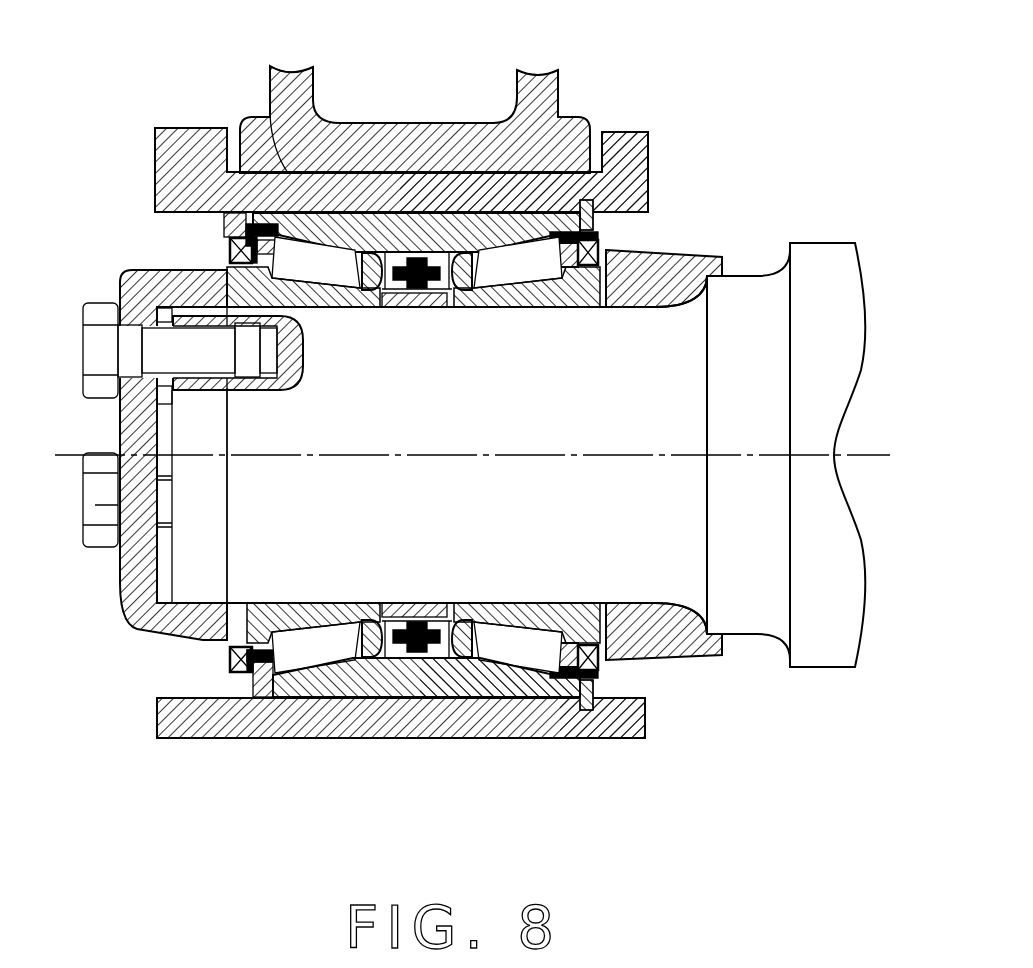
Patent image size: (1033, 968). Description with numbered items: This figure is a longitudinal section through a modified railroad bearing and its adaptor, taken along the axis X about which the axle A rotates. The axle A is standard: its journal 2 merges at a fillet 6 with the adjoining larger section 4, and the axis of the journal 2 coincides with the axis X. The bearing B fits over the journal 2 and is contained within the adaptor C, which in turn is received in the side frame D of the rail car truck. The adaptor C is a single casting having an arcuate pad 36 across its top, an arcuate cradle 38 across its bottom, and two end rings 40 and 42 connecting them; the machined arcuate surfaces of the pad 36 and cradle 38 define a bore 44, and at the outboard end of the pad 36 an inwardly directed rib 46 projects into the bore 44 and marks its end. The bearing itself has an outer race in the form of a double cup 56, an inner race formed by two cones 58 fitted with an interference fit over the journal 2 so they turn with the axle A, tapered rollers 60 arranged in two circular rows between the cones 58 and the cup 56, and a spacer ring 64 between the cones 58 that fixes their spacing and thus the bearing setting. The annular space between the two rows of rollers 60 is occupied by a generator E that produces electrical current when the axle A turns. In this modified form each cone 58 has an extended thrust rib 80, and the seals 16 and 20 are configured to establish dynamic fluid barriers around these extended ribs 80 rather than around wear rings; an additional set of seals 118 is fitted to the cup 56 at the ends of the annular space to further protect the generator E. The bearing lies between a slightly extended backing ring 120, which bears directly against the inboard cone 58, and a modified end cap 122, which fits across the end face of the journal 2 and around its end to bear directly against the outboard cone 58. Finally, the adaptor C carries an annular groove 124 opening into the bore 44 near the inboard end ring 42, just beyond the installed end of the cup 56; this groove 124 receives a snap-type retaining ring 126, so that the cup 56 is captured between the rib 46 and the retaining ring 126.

The journal 2 is at (578, 538).
The larger section 4 is at (745, 543).
The fillet 6 is at (673, 660).
The seal 16 is at (547, 240).
The seal 20 is at (230, 250).
The pad 36 is at (348, 143).
The cradle 38 is at (312, 725).
The end ring 40 is at (157, 163).
The end ring 42 is at (623, 173).
The bore 44 is at (483, 680).
The rib 46 is at (230, 253).
The double cup 56 is at (348, 680).
The cone 58 is at (330, 300).
The tapered roller 60 is at (303, 253).
The spacer ring 64 is at (408, 310).
The thrust rib 80 is at (567, 275).
The seal 118 is at (358, 603).
The backing ring 120 is at (670, 260).
The end cap 122 is at (145, 637).
The annular groove 124 is at (567, 740).
The retaining ring 126 is at (645, 740).
The axle A is at (870, 320).
The bearing B is at (417, 705).
The adaptor C is at (551, 158).
The side frame D is at (543, 66).
The generator E is at (417, 598).
The axis X is at (483, 455).